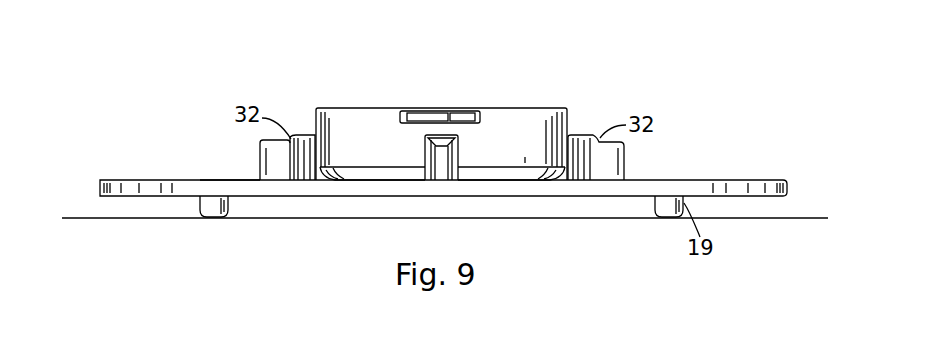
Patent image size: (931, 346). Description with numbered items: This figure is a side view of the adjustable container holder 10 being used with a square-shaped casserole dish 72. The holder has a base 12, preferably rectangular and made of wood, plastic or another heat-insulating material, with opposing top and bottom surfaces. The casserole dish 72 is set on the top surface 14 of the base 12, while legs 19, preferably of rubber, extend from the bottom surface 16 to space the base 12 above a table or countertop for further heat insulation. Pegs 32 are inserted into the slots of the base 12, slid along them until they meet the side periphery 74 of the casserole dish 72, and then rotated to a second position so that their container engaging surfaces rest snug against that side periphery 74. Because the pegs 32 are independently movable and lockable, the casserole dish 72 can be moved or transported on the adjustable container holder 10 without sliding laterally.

The adjustable container holder 10 is at (300, 86).
The base 12 is at (157, 179).
The top surface 14 is at (236, 180).
The bottom surface 16 is at (357, 197).
The legs 19 is at (229, 201).
The pegs 32 is at (423, 142).
The casserole dish 72 is at (527, 146).
The side periphery 74 is at (568, 113).